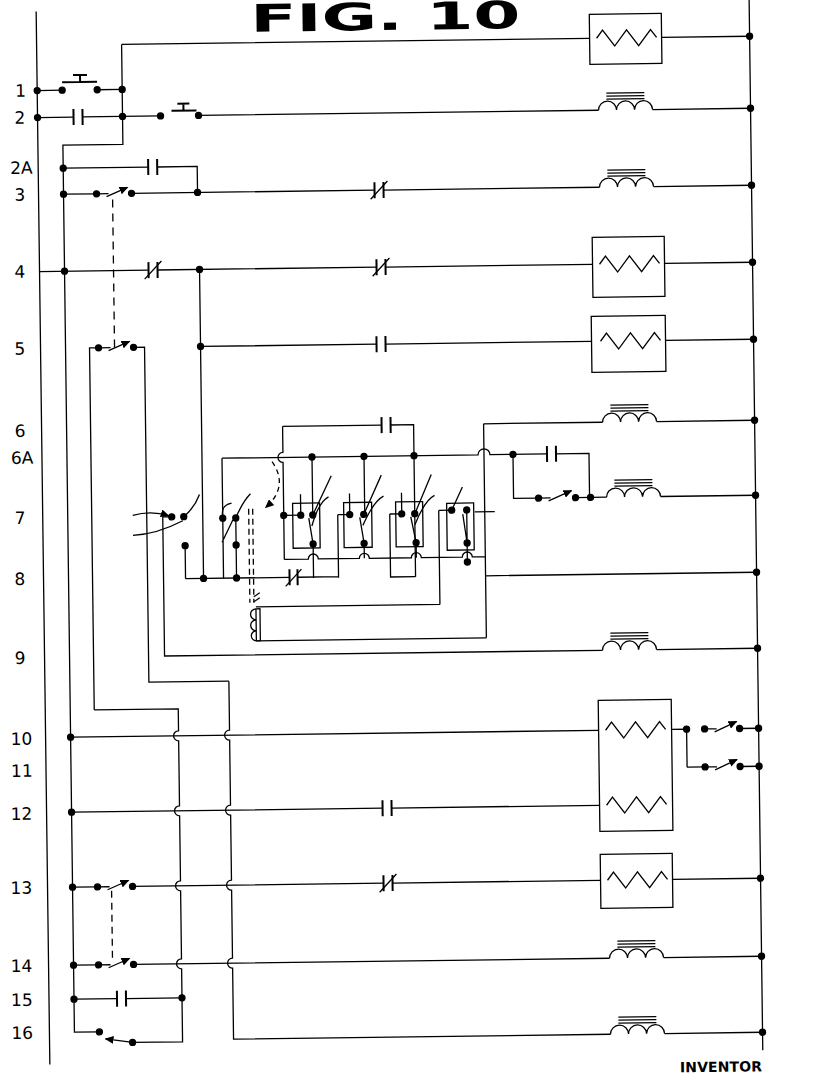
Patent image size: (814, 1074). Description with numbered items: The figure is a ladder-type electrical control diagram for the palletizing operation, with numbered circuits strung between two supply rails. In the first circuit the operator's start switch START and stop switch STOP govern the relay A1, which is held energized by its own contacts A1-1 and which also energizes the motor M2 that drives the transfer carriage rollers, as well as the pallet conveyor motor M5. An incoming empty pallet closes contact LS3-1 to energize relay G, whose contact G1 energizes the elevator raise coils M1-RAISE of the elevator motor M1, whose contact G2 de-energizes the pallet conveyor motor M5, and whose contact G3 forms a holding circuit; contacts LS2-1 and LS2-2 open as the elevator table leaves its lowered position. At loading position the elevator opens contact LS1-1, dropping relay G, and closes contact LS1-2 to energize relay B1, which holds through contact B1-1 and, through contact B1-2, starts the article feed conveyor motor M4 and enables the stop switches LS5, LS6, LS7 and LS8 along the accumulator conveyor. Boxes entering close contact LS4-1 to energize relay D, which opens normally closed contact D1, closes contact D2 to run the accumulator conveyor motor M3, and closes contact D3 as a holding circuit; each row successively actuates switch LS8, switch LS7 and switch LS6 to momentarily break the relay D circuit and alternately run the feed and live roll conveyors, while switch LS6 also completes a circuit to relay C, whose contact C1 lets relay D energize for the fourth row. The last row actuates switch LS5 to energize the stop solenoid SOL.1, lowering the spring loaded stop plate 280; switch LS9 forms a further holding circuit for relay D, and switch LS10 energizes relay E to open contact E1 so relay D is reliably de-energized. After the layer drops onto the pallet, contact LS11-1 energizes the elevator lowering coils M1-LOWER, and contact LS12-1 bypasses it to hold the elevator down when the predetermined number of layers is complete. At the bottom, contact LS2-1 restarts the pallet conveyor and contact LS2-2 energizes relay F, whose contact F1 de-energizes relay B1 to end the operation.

The start switch START is at (70, 68).
The stop switch STOP is at (172, 100).
The contacts A1-1 is at (84, 122).
The motor M2 is at (589, 64).
The relay A1 is at (597, 116).
The contact B1-1 is at (183, 159).
The contact LS1-2 is at (113, 205).
The contact F1 is at (371, 194).
The relay B1 is at (597, 194).
The contact B1-2 is at (159, 269).
The contact D1 is at (371, 270).
The article feed conveyor motor M4 is at (589, 289).
The contact LS1-1 is at (112, 347).
The contact D2 is at (371, 347).
The motor M3 is at (587, 369).
The contact C1 is at (375, 427).
The relay C is at (597, 428).
The contact D3 is at (553, 457).
The contact LS4-1 is at (562, 516).
The relay D is at (652, 504).
The stop plate 280 is at (254, 532).
The switch LS9 is at (231, 518).
The switch LS10 is at (158, 529).
The switch LS8 is at (317, 556).
The switch LS7 is at (369, 560).
The switch LS6 is at (411, 549).
The switch LS5 is at (467, 541).
The contact E1 is at (276, 590).
The stop solenoid SOL.1 is at (242, 629).
The relay E is at (594, 657).
The elevator motor M1 is at (589, 773).
The elevator lowering motor coils M1-LOWER is at (588, 724).
The elevator raise coils M1-RAISE is at (588, 824).
The contact LS11-1 is at (710, 728).
The contact LS12-1 is at (714, 770).
The contact G1 is at (371, 811).
The contact G2 is at (371, 886).
The pallet conveyor motor M5 is at (589, 909).
The contact LS2-1 is at (112, 869).
The contact LS2-2 is at (140, 947).
The relay F is at (597, 964).
The contact G3 is at (117, 994).
The relay G is at (597, 1040).
The contact LS3-1 is at (107, 1046).